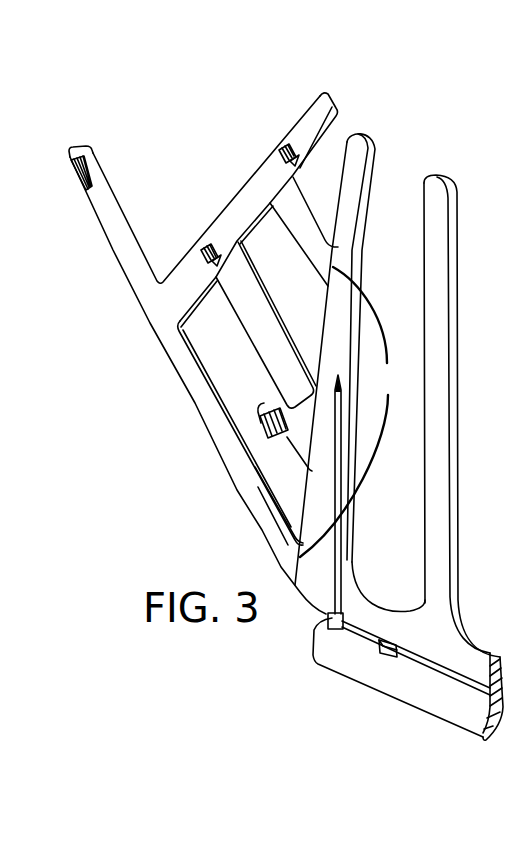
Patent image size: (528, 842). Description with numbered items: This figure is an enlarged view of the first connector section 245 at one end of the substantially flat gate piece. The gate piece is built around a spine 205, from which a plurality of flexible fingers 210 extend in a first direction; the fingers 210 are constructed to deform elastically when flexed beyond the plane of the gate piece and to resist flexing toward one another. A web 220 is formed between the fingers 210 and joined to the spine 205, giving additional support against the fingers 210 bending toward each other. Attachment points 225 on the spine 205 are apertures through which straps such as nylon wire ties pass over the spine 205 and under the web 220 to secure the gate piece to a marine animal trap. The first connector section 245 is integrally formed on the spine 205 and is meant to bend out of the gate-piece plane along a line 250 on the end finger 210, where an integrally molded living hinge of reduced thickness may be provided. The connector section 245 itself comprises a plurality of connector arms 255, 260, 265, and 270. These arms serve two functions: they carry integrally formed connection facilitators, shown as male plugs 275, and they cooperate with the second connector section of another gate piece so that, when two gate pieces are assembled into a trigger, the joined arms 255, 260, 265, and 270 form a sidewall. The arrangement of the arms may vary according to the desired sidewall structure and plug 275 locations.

The first connector section 245 is at (179, 108).
The connector arm 255 is at (195, 403).
The connector arm 260 is at (248, 181).
The connector arm 265 is at (262, 307).
The connector arm 270 is at (306, 205).
The male plug 275 is at (282, 150).
The finger 210 is at (358, 157).
The web 220 is at (362, 598).
The spine 205 is at (450, 707).
The attachment point 225 is at (385, 653).
The line 250 is at (320, 430).